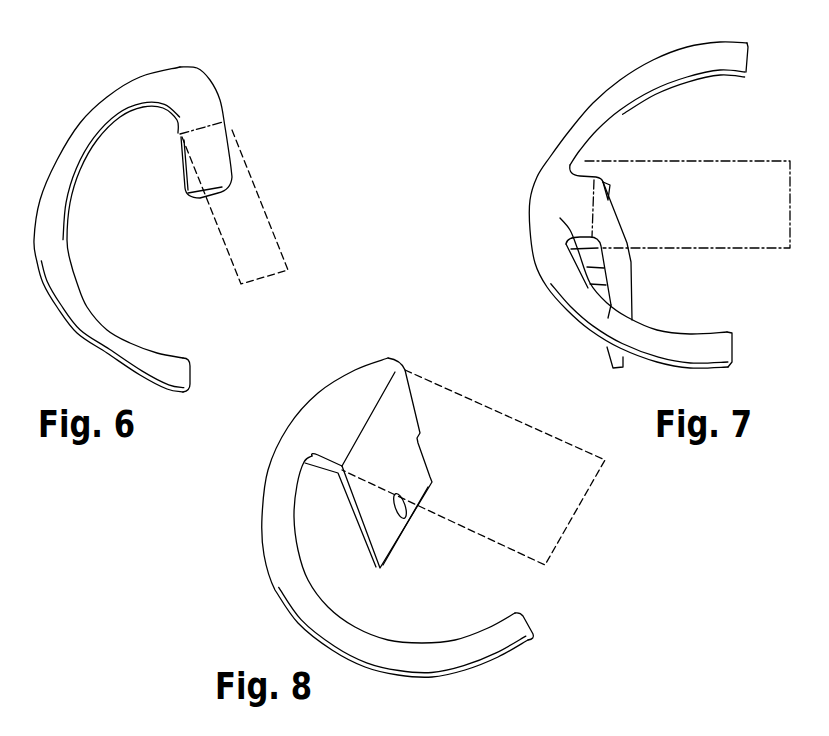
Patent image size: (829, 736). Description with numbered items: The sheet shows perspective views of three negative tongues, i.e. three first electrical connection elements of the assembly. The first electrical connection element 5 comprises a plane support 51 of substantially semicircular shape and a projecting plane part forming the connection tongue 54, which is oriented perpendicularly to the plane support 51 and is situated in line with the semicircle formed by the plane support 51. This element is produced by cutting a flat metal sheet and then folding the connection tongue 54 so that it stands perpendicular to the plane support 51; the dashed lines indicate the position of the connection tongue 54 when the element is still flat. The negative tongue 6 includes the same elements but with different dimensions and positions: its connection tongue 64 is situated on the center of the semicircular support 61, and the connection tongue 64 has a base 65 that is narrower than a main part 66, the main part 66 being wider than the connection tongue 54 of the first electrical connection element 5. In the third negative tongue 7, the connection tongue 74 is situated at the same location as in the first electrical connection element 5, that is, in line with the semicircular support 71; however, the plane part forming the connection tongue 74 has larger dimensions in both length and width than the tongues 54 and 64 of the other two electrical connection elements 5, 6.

In FIG. 6, the first electrical connection element 5 is at (84, 65).
In FIG. 6, the plane support 51 is at (82, 143).
In FIG. 6, the connection tongue 54 is at (235, 160).
In FIG. 7, the first electrical connection element 6 is at (528, 98).
In FIG. 7, the semicircular support 61 is at (613, 92).
In FIG. 7, the connection tongue 64 is at (613, 237).
In FIG. 7, the base 65 is at (560, 218).
In FIG. 7, the main part 66 is at (637, 290).
In FIG. 8, the first electrical connection element 7 is at (349, 341).
In FIG. 8, the semicircular support 71 is at (325, 433).
In FIG. 8, the connection tongue 74 is at (413, 408).